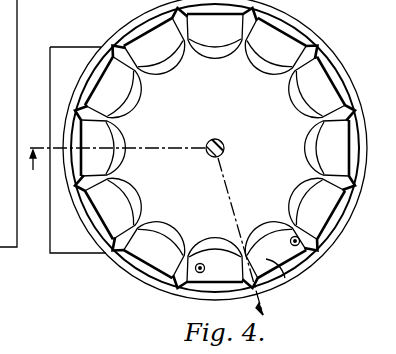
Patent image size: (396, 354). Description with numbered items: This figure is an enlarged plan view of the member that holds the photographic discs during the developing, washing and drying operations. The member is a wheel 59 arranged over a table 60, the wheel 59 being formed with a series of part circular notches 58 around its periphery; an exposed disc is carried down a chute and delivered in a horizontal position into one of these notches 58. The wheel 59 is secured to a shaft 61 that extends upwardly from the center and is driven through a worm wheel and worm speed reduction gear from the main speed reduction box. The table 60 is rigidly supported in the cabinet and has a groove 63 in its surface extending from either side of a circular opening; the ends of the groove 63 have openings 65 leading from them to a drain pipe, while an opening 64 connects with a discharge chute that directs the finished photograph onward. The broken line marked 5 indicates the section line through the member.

The section line 5- 5 is at (263, 315).
The part circular notch 58 is at (319, 63).
The wheel 59 is at (215, 148).
The table 60 is at (141, 272).
The shaft 61 is at (225, 148).
The groove 63 is at (167, 265).
The opening 64 is at (279, 271).
The openings 65 is at (201, 274).